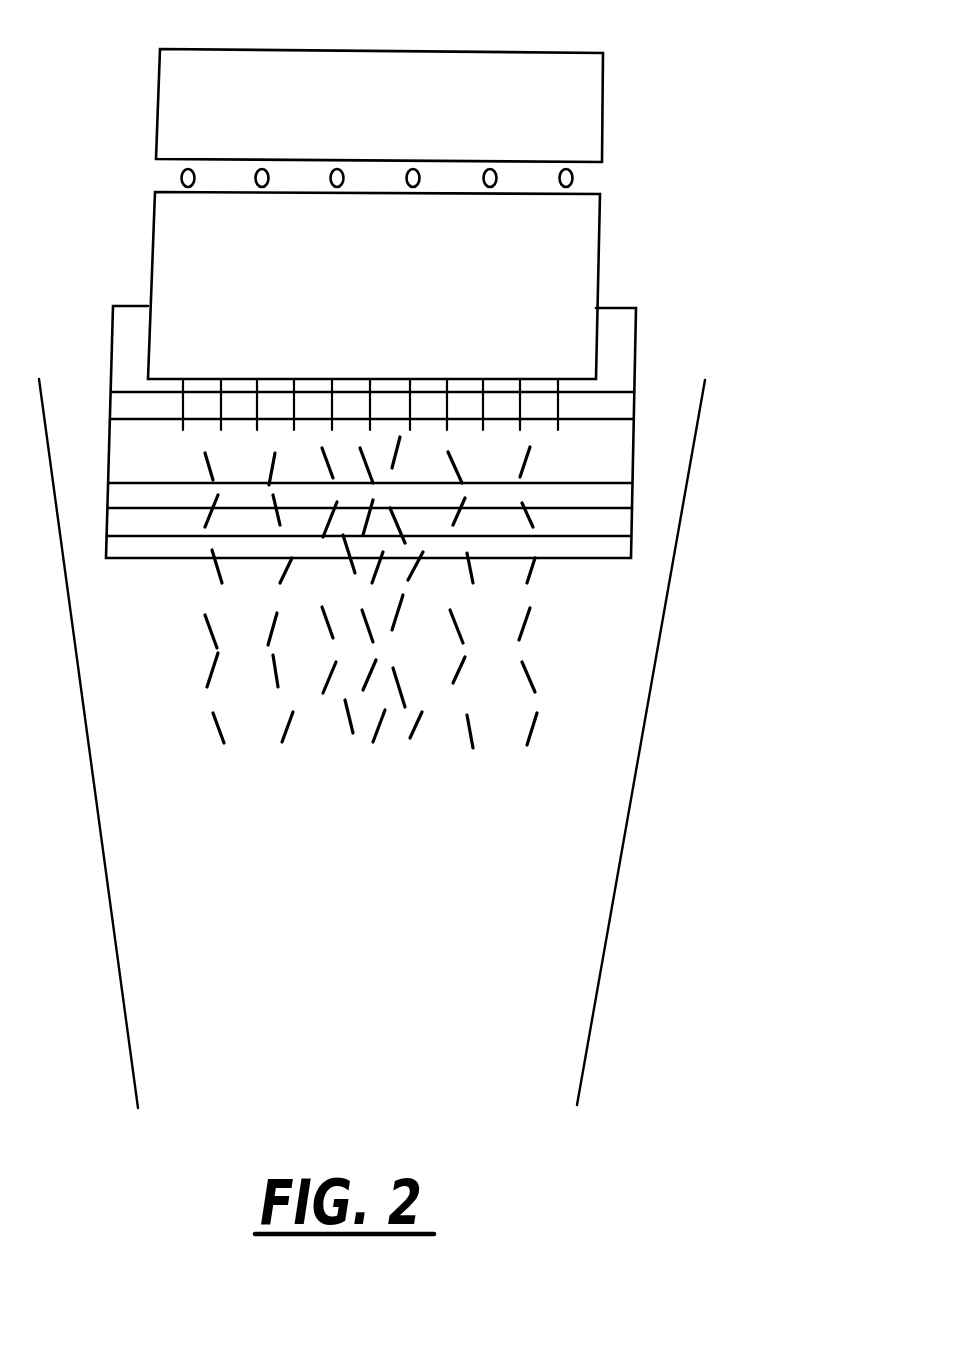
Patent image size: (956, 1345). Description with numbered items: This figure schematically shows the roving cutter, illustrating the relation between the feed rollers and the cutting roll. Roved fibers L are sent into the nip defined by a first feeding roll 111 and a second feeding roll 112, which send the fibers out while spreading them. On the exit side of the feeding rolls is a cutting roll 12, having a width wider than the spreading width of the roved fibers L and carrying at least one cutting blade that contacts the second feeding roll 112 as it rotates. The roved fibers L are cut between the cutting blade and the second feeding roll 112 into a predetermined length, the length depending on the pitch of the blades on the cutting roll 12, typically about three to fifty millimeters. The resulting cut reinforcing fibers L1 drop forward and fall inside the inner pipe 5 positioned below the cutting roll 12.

The first feeding roll 111 is at (610, 86).
The roved fibers L is at (592, 177).
The second feeding roll 112 is at (602, 277).
The cutting roll 12 is at (634, 500).
The cut reinforcing fibers L1 is at (572, 715).
The inner pipe 5 is at (627, 849).